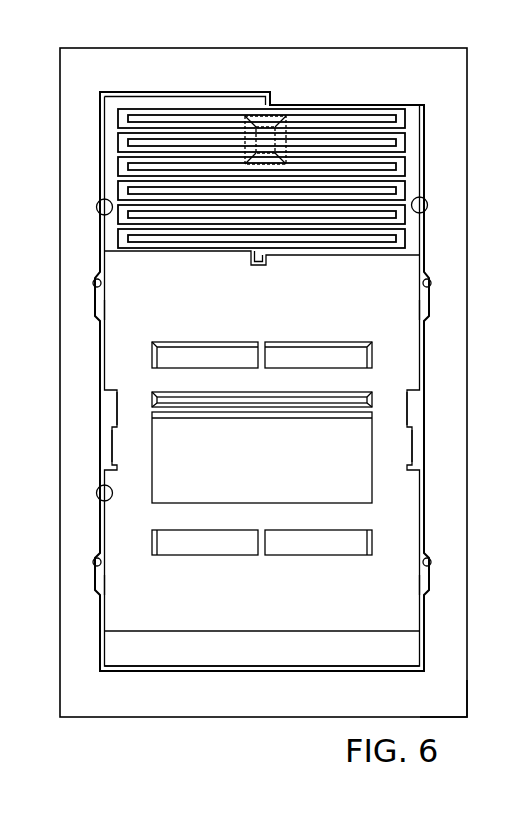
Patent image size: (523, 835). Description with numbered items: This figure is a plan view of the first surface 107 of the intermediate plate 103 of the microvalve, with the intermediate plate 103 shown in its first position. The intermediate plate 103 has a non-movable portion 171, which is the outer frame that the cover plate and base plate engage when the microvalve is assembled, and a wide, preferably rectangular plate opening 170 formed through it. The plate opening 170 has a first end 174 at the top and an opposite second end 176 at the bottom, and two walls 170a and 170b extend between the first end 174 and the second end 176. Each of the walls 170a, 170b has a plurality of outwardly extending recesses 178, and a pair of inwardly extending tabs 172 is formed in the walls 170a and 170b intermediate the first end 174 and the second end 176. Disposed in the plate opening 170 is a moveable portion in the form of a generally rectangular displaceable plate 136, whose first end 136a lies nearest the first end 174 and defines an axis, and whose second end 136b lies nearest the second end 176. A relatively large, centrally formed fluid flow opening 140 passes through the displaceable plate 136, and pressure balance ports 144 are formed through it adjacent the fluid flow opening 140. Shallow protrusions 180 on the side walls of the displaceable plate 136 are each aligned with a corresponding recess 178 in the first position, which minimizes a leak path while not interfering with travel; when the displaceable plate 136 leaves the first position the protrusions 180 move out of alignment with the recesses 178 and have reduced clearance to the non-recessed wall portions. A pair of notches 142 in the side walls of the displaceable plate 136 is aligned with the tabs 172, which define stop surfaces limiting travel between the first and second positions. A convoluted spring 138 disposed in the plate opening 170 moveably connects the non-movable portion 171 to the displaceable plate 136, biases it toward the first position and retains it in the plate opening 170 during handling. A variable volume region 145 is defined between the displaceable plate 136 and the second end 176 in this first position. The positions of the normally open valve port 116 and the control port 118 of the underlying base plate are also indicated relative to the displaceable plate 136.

The intermediate plate 103 is at (88, 47).
The first surface 107 is at (438, 71).
The control port 118 is at (280, 134).
The first end 174 is at (432, 108).
The convoluted spring 138 is at (405, 177).
The wall 170a is at (96, 208).
The wall 170b is at (428, 206).
The plate opening 170 is at (96, 493).
The first end 136a is at (410, 270).
The displaceable plate 136 is at (117, 375).
The second end 136b is at (403, 615).
The recesses 178 is at (97, 287).
The protrusions 180 is at (103, 308).
The pressure balance ports 144 is at (305, 353).
The normally open valve port 116 is at (347, 398).
The fluid flow opening 140 is at (350, 482).
The notches 142 is at (119, 400).
The tabs 172 is at (112, 447).
The variable volume region 145 is at (118, 647).
The second end 176 is at (378, 668).
The non-movable portion 171 is at (445, 706).